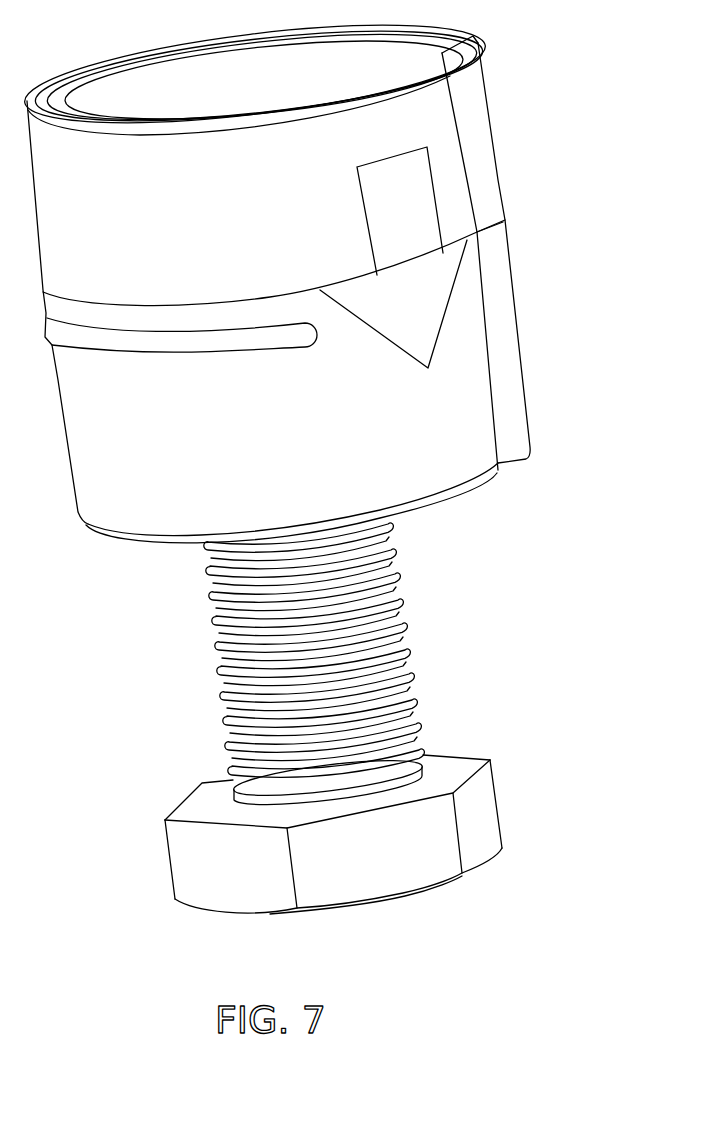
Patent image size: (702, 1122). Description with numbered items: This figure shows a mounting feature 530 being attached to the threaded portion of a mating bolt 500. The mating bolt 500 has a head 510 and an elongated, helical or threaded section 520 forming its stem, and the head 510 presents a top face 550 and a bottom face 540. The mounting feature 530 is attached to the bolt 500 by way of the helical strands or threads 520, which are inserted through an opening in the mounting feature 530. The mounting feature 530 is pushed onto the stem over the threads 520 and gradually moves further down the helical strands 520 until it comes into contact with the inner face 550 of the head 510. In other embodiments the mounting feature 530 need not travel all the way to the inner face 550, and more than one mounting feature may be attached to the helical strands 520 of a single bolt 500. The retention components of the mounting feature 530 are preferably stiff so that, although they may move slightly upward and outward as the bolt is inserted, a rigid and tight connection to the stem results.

The mating bolt 500 is at (467, 685).
The head 510 is at (182, 918).
The helical strands or threads 520 is at (222, 676).
The mounting feature 530 is at (510, 267).
The bottom face 540 is at (502, 853).
The top face 550 is at (490, 759).